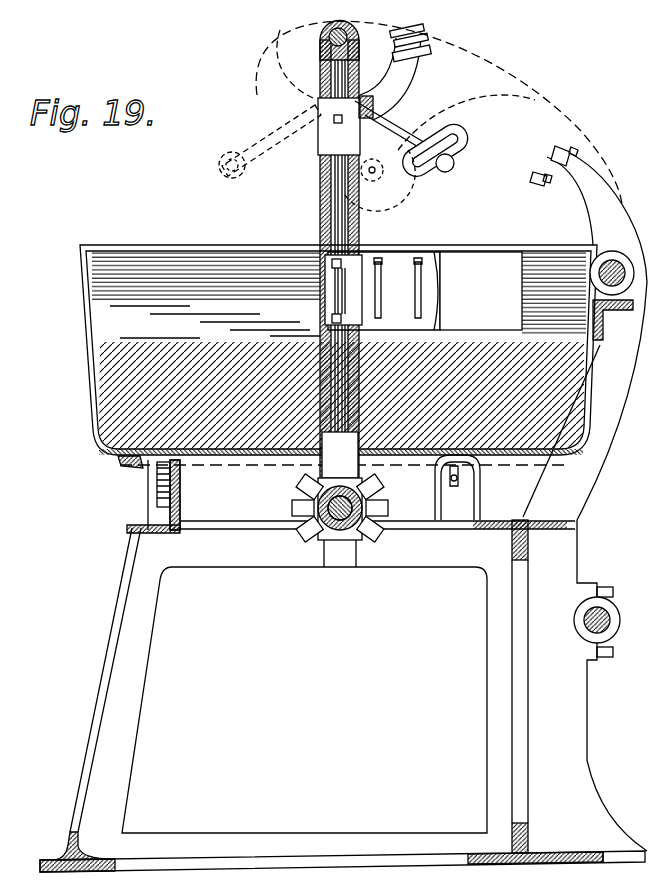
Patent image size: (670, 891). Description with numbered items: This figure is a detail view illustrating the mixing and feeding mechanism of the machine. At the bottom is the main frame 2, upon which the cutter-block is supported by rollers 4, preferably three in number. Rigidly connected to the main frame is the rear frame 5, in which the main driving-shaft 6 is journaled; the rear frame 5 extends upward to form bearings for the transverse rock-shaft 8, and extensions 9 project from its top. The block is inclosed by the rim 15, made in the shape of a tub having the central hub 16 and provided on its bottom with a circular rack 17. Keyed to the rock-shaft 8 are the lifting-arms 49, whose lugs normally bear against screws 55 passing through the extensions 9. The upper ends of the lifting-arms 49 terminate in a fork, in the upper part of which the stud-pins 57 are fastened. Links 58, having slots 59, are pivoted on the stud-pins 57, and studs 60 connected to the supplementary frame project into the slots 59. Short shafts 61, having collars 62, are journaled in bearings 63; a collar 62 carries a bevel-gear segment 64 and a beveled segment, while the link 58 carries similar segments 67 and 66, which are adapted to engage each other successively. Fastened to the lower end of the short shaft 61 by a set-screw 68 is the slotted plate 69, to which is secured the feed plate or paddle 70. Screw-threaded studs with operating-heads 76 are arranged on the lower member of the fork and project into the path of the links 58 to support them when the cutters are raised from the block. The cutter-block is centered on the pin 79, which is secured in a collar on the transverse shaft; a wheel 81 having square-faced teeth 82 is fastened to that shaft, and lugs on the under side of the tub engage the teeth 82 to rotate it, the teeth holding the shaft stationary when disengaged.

The main frame 2 is at (145, 659).
The rollers 4 is at (160, 470).
The rear frame 5 is at (583, 710).
The main driving-shaft 6 is at (586, 632).
The transverse rock-shaft 8 is at (634, 273).
The extensions 9 is at (597, 214).
The rim 15 is at (88, 284).
The central hub 16 is at (358, 463).
The circular rack 17 is at (120, 465).
The lifting-arms 49 is at (548, 110).
The screws 55 is at (540, 185).
The stud-pins 57 is at (328, 38).
The links 58 is at (416, 116).
The slots 59 is at (447, 139).
The studs 60 is at (447, 170).
The short shafts 61 is at (343, 218).
The collars 62 is at (322, 140).
The bearings 63 is at (324, 60).
The bevel-gear segment 64 is at (370, 120).
The beveled segment 66 is at (390, 78).
The bevel-gear segment 67 is at (426, 33).
The set-screw 68 is at (331, 263).
The slotted plate 69 is at (384, 291).
The feed plate or paddle 70 is at (500, 298).
The operating-heads 76 is at (390, 172).
The pin 79 is at (340, 442).
The wheel 81 is at (318, 534).
The square-faced teeth 82 is at (298, 486).